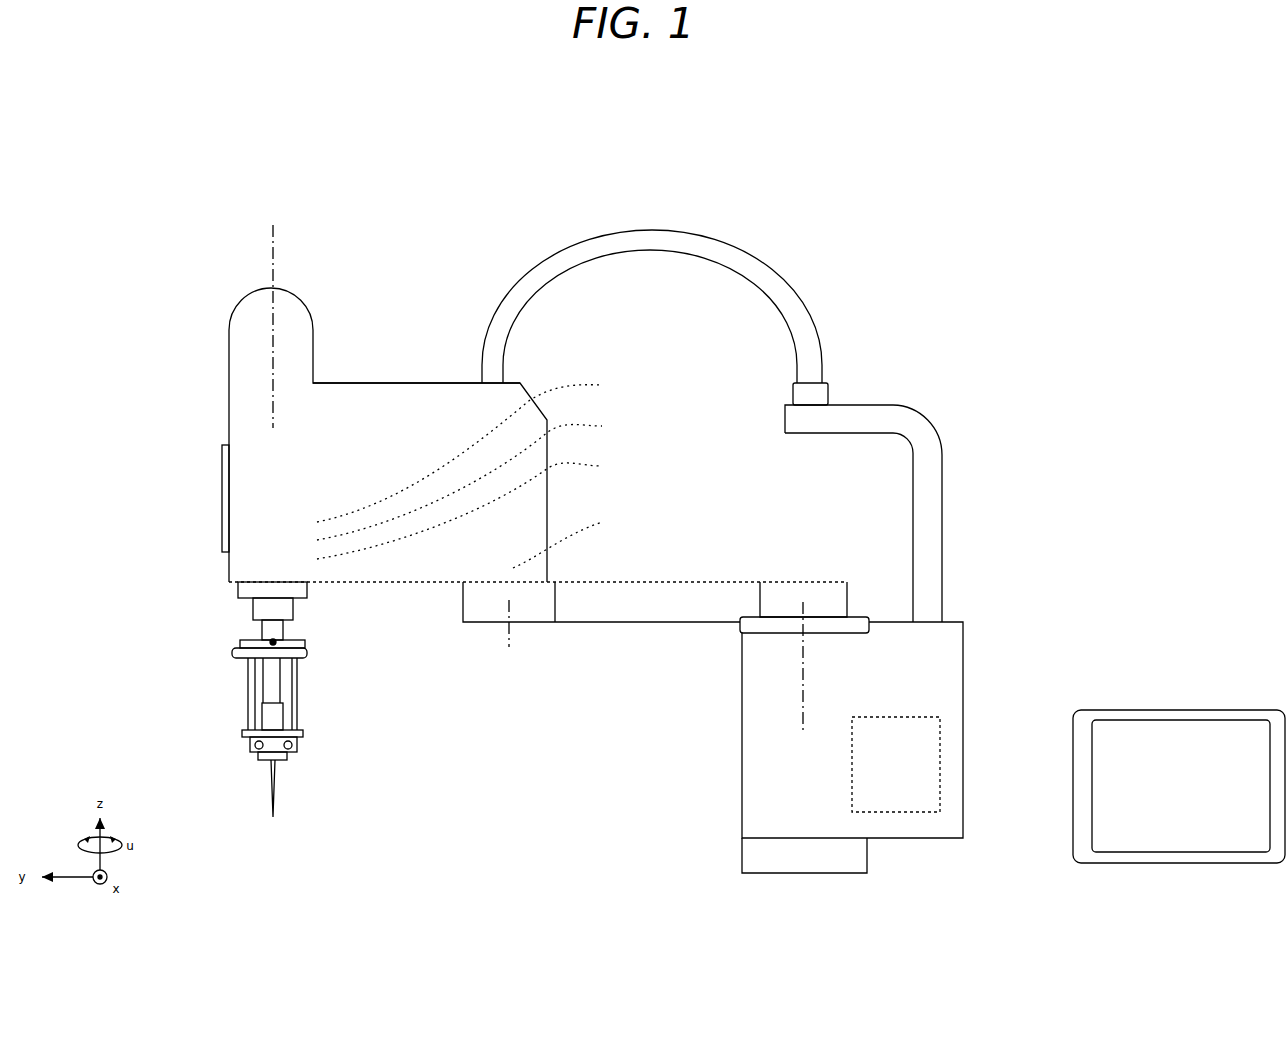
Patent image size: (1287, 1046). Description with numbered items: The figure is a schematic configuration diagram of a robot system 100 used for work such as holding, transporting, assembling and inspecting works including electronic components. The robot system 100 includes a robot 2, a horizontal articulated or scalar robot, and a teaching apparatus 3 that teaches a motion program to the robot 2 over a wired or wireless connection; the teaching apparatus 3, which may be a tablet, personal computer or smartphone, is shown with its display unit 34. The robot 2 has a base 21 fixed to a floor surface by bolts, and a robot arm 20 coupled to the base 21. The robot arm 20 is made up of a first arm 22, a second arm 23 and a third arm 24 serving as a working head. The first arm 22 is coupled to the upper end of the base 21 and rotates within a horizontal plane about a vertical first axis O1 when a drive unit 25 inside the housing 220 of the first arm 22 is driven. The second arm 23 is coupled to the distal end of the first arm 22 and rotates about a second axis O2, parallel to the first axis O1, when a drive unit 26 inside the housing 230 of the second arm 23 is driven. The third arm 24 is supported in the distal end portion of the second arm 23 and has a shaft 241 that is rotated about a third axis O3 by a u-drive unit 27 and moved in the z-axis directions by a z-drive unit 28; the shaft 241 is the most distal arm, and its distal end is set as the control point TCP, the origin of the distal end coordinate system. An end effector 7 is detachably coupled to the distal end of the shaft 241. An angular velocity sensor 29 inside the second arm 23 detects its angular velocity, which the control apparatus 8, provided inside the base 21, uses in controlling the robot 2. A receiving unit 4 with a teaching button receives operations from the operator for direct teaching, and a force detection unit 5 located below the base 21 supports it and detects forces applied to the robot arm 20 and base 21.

The robot system 100 is at (880, 203).
The robot 2 is at (565, 234).
The teaching apparatus 3 is at (1179, 780).
The receiving unit 4 is at (221, 503).
The force detection unit 5 is at (770, 853).
The end effector 7 is at (313, 680).
The control apparatus 8 is at (936, 768).
The robot arm 20 is at (666, 600).
The base 21 is at (930, 665).
The first arm 22 is at (598, 650).
The second arm 23 is at (252, 393).
The third arm 24 is at (274, 610).
The drive unit 25 is at (818, 600).
The drive unit 26 is at (571, 539).
The u-drive unit 27 is at (473, 507).
The z-drive unit 28 is at (473, 478).
The angular velocity sensor 29 is at (473, 449).
The display unit 34 is at (1180, 820).
The housing 220 is at (727, 600).
The housing 230 is at (397, 380).
The shaft 241 is at (277, 639).
The first axis O1 is at (800, 711).
The second axis O2 is at (509, 652).
The third axis O3 is at (283, 240).
The control point TCP is at (271, 640).